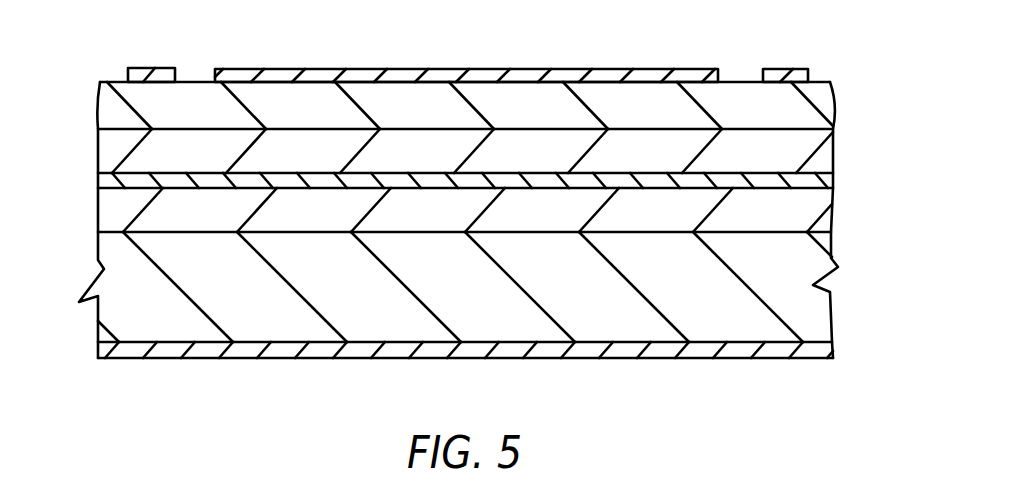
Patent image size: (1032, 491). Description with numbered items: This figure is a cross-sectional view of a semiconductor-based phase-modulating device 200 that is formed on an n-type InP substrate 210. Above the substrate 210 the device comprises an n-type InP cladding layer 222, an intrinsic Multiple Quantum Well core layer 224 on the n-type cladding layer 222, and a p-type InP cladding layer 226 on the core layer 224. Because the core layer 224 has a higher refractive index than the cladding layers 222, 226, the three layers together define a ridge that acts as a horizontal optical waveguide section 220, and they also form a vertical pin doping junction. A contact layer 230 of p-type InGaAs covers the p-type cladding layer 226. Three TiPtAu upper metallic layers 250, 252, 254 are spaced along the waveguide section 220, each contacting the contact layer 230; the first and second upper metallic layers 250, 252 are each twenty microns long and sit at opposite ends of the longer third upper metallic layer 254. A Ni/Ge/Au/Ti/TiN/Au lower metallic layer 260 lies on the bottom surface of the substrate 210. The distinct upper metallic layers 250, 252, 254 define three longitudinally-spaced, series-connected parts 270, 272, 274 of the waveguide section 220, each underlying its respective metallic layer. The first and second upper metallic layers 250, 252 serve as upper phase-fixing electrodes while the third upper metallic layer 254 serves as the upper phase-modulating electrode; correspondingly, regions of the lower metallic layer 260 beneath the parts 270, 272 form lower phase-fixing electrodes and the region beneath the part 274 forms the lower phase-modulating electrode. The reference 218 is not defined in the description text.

The phase-modulating device 200 is at (595, 43).
The substrate 210 is at (813, 293).
The back contact layer region 218 is at (735, 347).
The waveguide section 220 is at (970, 138).
The n-type cladding layer 222 is at (812, 207).
The core layer 224 is at (820, 181).
The p-type cladding layer 226 is at (817, 157).
The contact layer 230 is at (827, 103).
The first upper metallic layer 250 is at (143, 80).
The second upper metallic layer 252 is at (773, 67).
The third upper metallic layer 254 is at (447, 69).
The lower metallic layer 260 is at (817, 350).
The first waveguide section part 270 is at (203, 368).
The second waveguide section part 272 is at (827, 369).
The third waveguide section part 274 is at (710, 369).